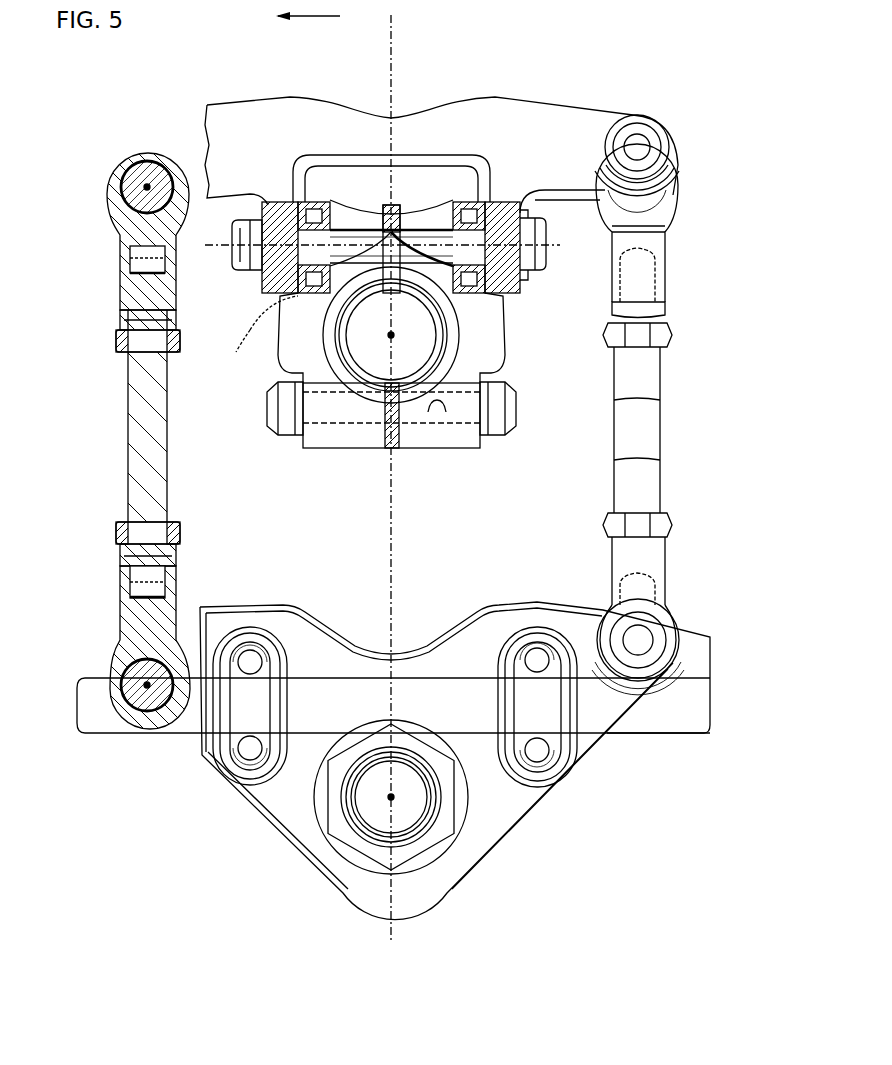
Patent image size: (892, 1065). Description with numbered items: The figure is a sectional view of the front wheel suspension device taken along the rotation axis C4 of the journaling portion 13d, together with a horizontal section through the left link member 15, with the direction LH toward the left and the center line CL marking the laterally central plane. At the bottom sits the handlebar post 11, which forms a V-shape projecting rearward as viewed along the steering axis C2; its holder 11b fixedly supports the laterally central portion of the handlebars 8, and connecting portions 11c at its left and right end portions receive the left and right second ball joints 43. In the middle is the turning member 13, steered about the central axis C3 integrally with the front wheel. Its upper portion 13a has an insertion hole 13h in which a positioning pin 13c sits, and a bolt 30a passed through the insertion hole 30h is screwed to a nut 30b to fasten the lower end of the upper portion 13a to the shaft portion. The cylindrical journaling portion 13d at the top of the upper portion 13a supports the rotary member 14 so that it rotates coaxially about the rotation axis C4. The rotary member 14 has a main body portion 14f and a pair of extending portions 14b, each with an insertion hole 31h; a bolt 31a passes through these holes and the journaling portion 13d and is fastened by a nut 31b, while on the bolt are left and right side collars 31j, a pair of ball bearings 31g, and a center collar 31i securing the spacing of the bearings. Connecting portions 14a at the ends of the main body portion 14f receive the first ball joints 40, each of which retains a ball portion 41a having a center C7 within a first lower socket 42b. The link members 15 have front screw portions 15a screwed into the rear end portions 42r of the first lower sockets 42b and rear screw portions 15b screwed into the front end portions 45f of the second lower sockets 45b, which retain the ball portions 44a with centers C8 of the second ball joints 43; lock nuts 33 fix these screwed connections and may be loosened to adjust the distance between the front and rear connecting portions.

The handlebars 8 is at (672, 735).
The handlebar post 11 is at (548, 816).
The holder 11b is at (255, 795).
The connecting portions 11c is at (680, 640).
The turning member 13 is at (280, 358).
The upper portion 13a is at (270, 364).
The positioning pin 13c is at (460, 318).
The journaling portion 13d is at (410, 212).
The insertion hole 13h is at (270, 305).
The rotary member 14 is at (560, 98).
The connecting portions 14a is at (670, 135).
The extending portions 14b is at (505, 288).
The main body portion 14f is at (505, 118).
The link members 15 is at (128, 430).
The screw portions 15a is at (124, 300).
The screw portions 15b is at (130, 596).
The bolt 30a is at (465, 412).
The nut 30b is at (288, 440).
The insertion hole 30h is at (437, 414).
The bolt 31a is at (535, 255).
The nut 31b is at (262, 268).
The ball bearings 31g is at (312, 200).
The insertion hole 31h is at (518, 272).
The center collar 31i is at (400, 205).
The side collars 31j is at (522, 222).
The lock nut 33 is at (116, 340).
The first ball joint 40 is at (678, 236).
The ball portion 41a is at (112, 182).
The first lower socket 42b is at (122, 262).
The rear end portion 42r is at (120, 325).
The second ball joint 43 is at (108, 573).
The ball portion 44a is at (122, 684).
The second lower socket 45b is at (118, 630).
The front end portion 45f is at (120, 552).
The steering axis C2 is at (394, 799).
The central axis C3 is at (394, 336).
The rotation axis C4 is at (228, 245).
The center C7 is at (147, 184).
The center C8 is at (147, 690).
The vehicle center line CL is at (394, 40).
The left-hand direction LH is at (291, 20).